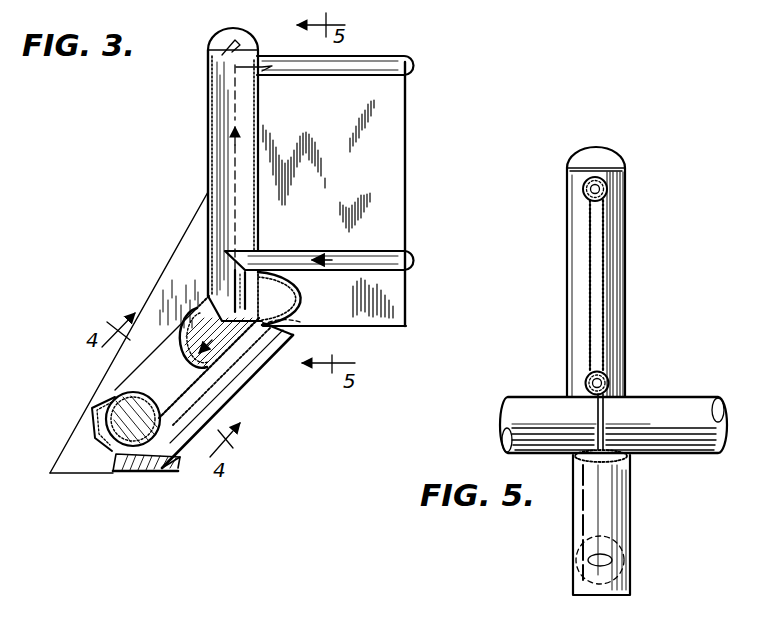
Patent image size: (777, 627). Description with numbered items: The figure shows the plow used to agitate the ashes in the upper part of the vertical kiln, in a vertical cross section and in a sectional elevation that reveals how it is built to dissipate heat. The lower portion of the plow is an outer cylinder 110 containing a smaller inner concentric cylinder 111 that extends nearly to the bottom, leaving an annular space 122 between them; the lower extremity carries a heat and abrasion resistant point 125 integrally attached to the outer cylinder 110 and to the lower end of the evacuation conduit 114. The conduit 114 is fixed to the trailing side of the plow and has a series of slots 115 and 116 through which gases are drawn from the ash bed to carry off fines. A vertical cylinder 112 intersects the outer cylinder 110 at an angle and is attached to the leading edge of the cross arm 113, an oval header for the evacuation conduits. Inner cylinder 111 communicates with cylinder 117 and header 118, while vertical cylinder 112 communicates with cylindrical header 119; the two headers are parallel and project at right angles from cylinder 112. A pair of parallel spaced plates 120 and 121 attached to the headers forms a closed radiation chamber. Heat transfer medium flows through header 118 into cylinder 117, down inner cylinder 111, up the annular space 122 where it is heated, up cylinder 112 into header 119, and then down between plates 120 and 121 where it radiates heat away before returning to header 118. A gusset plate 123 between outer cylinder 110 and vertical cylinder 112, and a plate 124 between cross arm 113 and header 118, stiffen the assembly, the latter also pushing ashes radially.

In FIG. 3, the outer cylinder 110 is at (118, 396).
In FIG. 3, the inner concentric cylinder 111 is at (117, 474).
In FIG. 3, the vertical cylinder 112 is at (210, 157).
In FIG. 3, the cross arm 113 is at (301, 325).
In FIG. 5, the cross arm 113 is at (655, 448).
In FIG. 3, the evacuation conduit 114 is at (257, 382).
In FIG. 3, the slot 115 is at (175, 448).
In FIG. 3, the slot 116 is at (222, 408).
In FIG. 3, the cylinder 117 is at (234, 270).
In FIG. 3, the header 118 is at (380, 255).
In FIG. 5, the header 118 is at (608, 380).
In FIG. 3, the cylindrical header 119 is at (385, 64).
In FIG. 5, the cylindrical header 119 is at (607, 190).
In FIG. 3, the plate 120 is at (385, 132).
In FIG. 5, the plate 120 is at (603, 288).
In FIG. 3, the plate 121 is at (454, 124).
In FIG. 5, the plate 121 is at (590, 312).
In FIG. 3, the annular space 122 is at (96, 420).
In FIG. 3, the gusset plate 123 is at (112, 373).
In FIG. 3, the plate 124 is at (409, 327).
In FIG. 5, the plate 124 is at (598, 418).
In FIG. 3, the heat and abrasion resistant point 125 is at (70, 462).